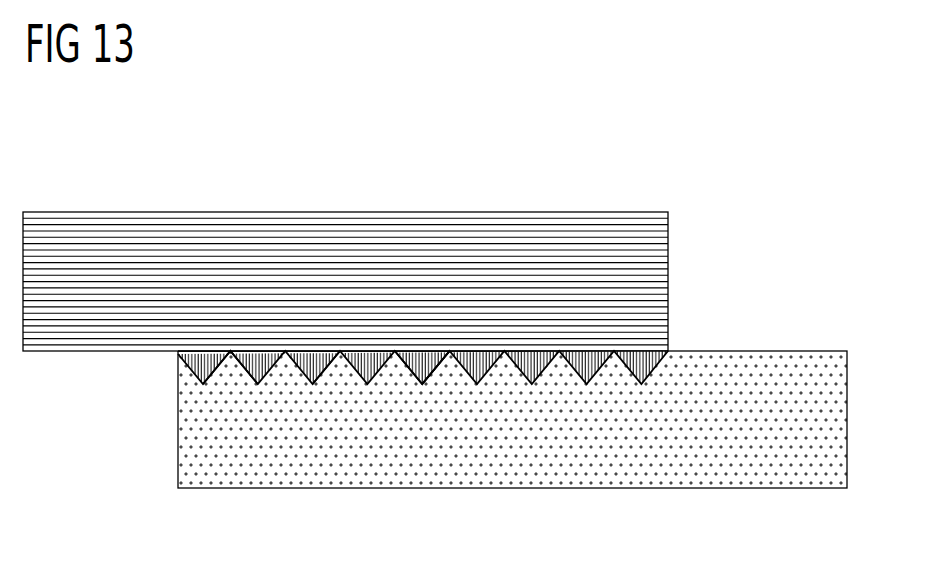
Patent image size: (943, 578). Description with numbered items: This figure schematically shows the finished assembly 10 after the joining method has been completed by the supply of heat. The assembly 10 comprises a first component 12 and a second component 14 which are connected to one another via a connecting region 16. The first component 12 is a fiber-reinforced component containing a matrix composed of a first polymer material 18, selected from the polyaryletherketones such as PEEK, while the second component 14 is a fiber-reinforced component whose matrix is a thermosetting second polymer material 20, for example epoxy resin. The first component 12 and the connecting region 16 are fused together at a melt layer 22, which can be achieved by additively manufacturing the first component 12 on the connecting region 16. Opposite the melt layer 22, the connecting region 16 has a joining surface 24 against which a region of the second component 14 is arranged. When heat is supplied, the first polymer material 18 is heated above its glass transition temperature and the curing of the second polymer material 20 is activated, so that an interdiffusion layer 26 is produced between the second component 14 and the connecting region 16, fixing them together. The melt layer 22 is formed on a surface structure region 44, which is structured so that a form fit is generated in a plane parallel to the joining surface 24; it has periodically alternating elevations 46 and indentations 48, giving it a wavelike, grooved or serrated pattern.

The assembly 10 is at (208, 130).
The first component 12 is at (617, 475).
The second component 14 is at (73, 222).
The connecting region 16 is at (152, 357).
The first polymer material 18 is at (540, 475).
The second polymer material 20 is at (185, 222).
The melt layer 22 is at (243, 369).
The joining surface 24 is at (517, 351).
The interdiffusion layer 26 is at (397, 351).
The surface structure region 44 is at (316, 424).
The elevations 46 is at (424, 382).
The indentations 48 is at (447, 372).